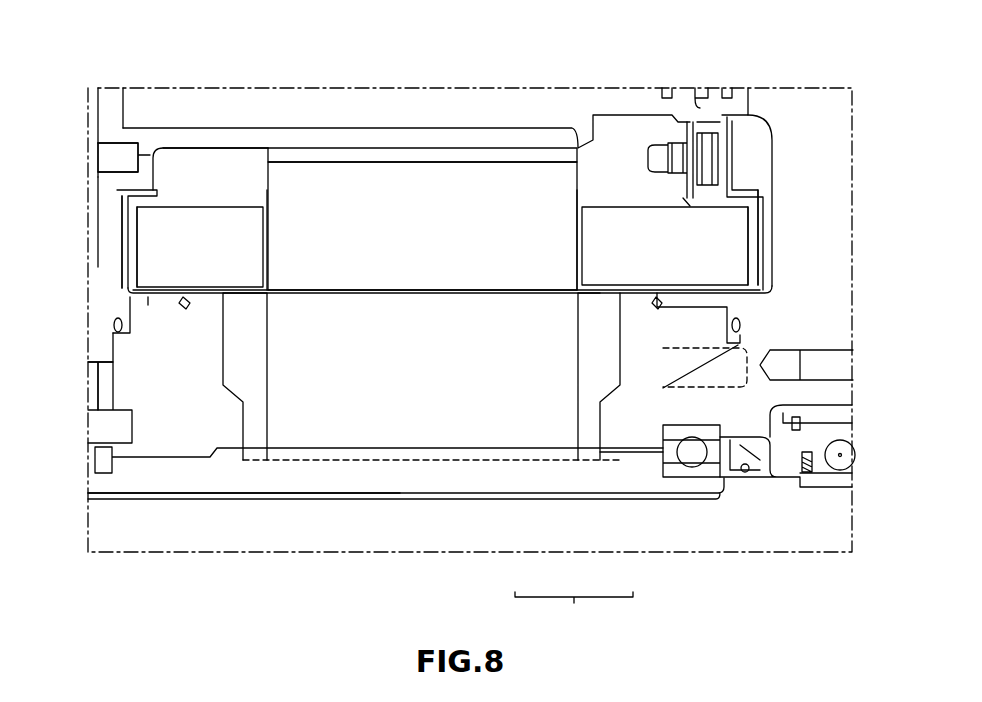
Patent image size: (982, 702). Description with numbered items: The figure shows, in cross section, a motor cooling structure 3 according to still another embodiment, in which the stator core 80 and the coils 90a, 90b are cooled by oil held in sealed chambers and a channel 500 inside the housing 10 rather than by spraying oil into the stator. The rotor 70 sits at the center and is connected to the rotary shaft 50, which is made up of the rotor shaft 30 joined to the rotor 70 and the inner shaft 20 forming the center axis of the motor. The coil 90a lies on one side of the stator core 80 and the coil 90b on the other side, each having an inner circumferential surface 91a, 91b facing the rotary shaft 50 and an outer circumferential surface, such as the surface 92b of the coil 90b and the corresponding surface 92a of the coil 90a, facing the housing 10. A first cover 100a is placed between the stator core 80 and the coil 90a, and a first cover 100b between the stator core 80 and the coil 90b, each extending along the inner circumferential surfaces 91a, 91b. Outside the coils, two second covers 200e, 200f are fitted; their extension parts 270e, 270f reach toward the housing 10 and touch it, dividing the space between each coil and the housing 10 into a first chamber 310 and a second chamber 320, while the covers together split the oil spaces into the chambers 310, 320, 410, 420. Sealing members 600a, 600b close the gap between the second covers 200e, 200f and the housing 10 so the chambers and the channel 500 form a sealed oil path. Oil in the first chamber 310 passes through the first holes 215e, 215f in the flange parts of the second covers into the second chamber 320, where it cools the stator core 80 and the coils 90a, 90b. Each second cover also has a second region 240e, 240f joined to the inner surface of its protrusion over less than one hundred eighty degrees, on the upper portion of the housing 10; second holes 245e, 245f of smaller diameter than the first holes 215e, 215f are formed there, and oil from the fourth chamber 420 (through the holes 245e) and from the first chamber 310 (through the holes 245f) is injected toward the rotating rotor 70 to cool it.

The motor cooling structure 3 is at (827, 36).
The housing 10 is at (317, 138).
The inner shaft 20 is at (533, 523).
The rotor shaft 30 is at (610, 480).
The rotary shaft 50 is at (574, 608).
The rotor 70 is at (408, 425).
The stator core 80 is at (510, 185).
The coil 90a is at (598, 220).
The coil 90b is at (233, 220).
The inner circumferential surface of coil 91a is at (742, 292).
The inner circumferential surface of coil 91b is at (140, 295).
The insulator wall 92a is at (722, 125).
The outer circumferential surface of coil 92b is at (177, 203).
The first cover 100a is at (582, 262).
The first cover 100b is at (263, 250).
The second cover 200e is at (760, 222).
The second cover 200f is at (114, 320).
The first hole 215e is at (760, 278).
The first hole 215f is at (127, 273).
The second region 240e is at (658, 307).
The second region 240f is at (160, 303).
The second hole 245e is at (690, 312).
The second hole 245f is at (187, 305).
The extension part 270e is at (708, 190).
The extension part 270f is at (143, 190).
The first chamber 310 is at (752, 150).
The second chamber 320 is at (690, 135).
The third chamber 410 is at (213, 162).
The fourth chamber 420 is at (120, 198).
The channel 500 is at (402, 160).
The sealing member 600a is at (743, 318).
The sealing member 600b is at (110, 327).